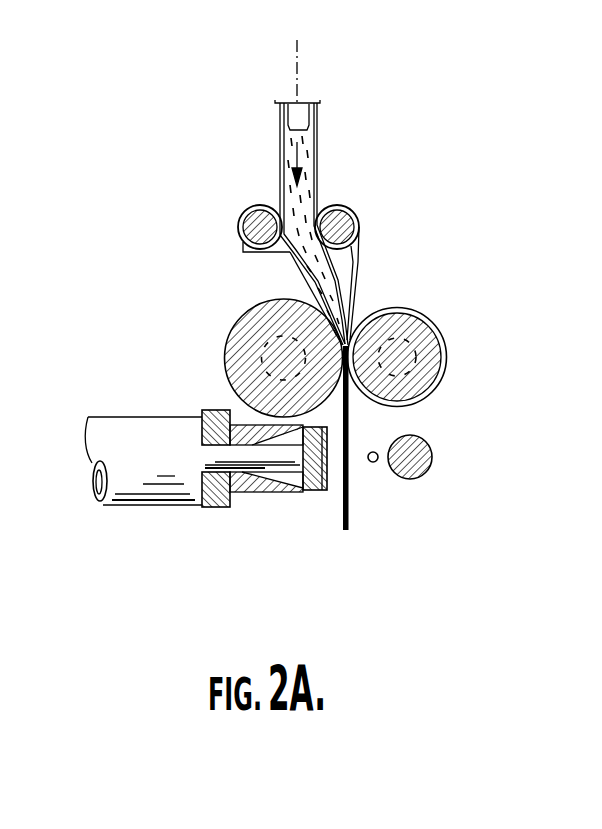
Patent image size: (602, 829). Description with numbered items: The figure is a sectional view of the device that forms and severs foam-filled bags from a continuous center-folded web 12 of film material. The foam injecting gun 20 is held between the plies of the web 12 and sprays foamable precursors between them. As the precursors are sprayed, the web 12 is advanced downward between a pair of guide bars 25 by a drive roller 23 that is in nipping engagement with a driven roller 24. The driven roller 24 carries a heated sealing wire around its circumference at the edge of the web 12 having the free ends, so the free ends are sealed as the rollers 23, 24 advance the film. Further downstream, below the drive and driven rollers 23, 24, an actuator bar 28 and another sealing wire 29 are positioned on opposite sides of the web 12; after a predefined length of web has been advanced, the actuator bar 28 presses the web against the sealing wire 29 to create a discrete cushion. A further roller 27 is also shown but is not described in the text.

The center-folded web 12 is at (345, 530).
The foam injecting gun 20 is at (303, 109).
The drive roller 23 is at (415, 353).
The driven roller 24 is at (232, 343).
The guide bars 25 is at (238, 222).
The roller 27 is at (432, 455).
The actuator bar 28 is at (253, 467).
The sealing wire 29 is at (373, 463).